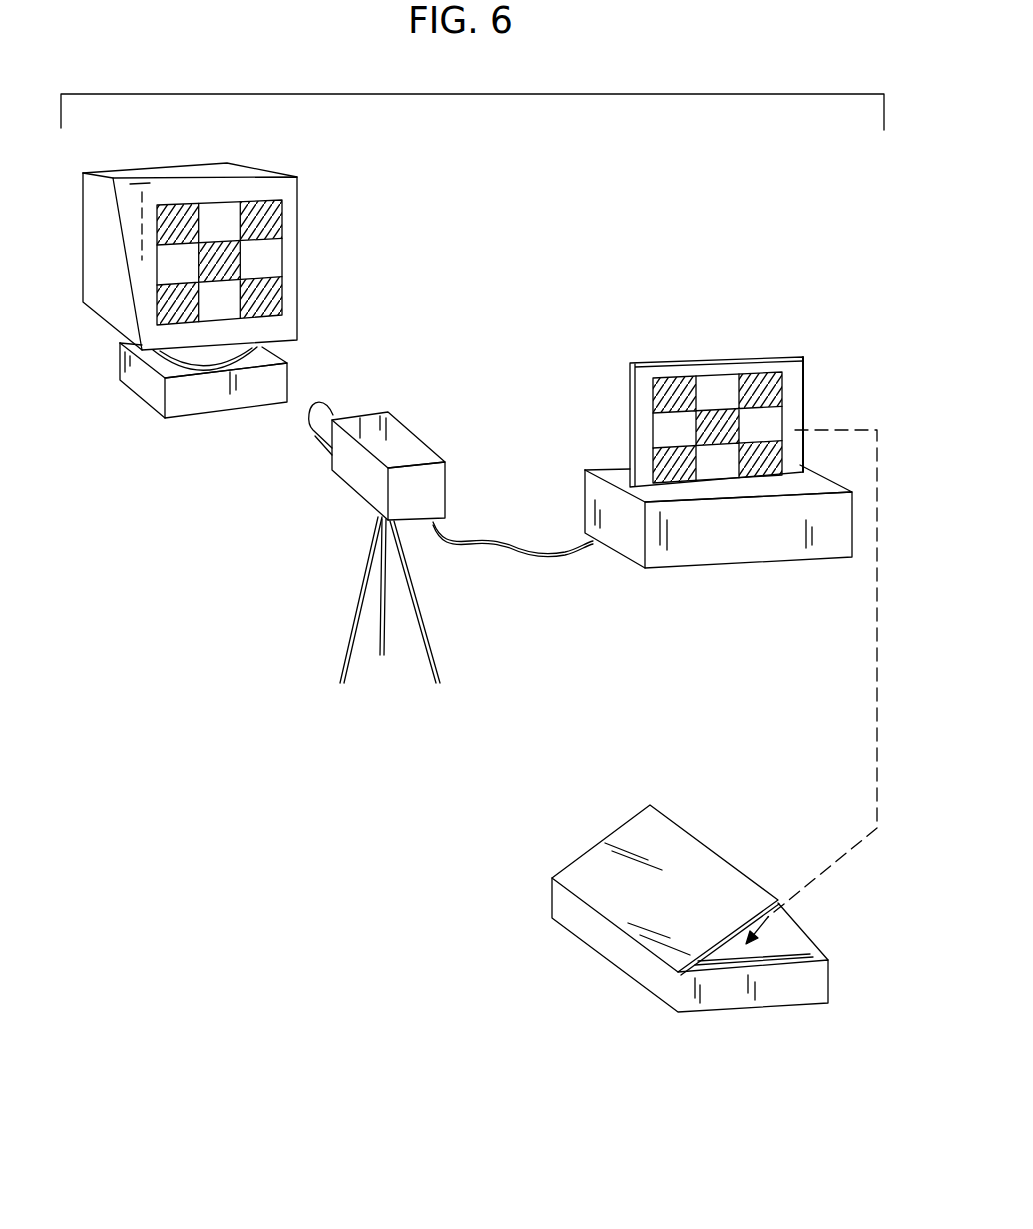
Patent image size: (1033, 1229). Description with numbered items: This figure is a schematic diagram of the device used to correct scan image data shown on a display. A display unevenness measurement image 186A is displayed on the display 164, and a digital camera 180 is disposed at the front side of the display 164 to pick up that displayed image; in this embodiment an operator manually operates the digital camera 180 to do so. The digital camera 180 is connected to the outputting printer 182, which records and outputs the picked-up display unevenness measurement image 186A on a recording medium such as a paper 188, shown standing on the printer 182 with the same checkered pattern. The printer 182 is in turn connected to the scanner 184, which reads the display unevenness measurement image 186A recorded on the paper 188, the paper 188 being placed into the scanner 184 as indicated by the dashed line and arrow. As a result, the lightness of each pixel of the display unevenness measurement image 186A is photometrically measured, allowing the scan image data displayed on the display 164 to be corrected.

The display 164 is at (272, 263).
The display unevenness measurement image 186A is at (223, 218).
The digital camera 180 is at (412, 445).
The outputting printer 182 is at (740, 557).
The paper 188 is at (797, 383).
The scanner 184 is at (585, 937).